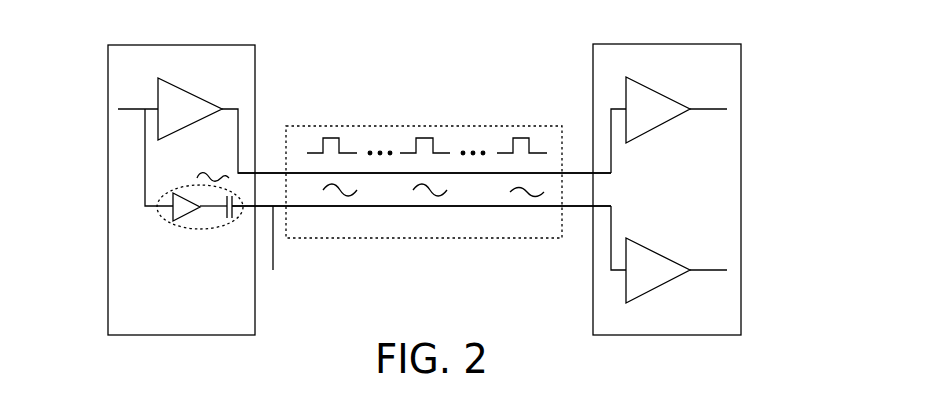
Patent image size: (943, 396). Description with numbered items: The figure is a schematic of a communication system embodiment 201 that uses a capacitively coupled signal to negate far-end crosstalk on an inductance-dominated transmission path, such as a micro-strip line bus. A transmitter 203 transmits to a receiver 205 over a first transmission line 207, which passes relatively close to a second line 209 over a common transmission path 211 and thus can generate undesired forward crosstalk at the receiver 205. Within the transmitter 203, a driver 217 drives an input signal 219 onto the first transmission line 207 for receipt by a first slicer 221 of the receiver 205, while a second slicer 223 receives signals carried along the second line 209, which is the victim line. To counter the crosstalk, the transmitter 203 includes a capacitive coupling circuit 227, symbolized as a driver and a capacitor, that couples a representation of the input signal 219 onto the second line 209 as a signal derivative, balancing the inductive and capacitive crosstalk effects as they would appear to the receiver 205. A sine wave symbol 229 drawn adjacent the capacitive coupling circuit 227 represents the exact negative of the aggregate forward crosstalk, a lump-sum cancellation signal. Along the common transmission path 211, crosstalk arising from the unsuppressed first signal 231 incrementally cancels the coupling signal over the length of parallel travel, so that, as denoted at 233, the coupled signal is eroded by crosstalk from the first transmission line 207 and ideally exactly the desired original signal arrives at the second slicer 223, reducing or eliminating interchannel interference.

The embodiment 201 is at (84, 131).
The transmitter 203 is at (255, 70).
The receiver 205 is at (741, 75).
The first transmission line 207 is at (275, 173).
The second line 209 is at (278, 206).
The common transmission path 211 is at (423, 126).
The driver 217 is at (183, 88).
The input signal 219 is at (155, 108).
The first slicer 221 is at (657, 92).
The second slicer 223 is at (635, 242).
The capacitive coupling circuit 227 is at (216, 226).
The sine wave symbol 229 is at (202, 173).
The first signal 231 is at (432, 148).
The eroded coupled signal 233 is at (422, 188).